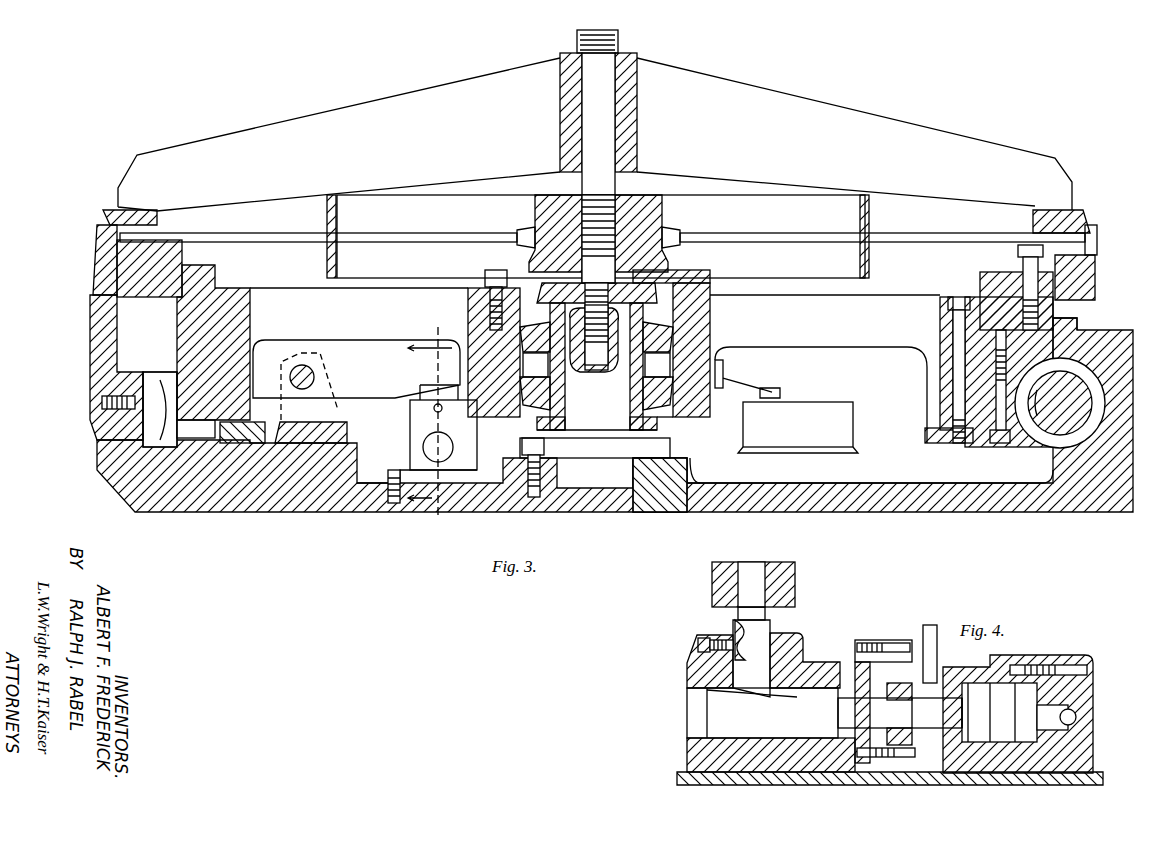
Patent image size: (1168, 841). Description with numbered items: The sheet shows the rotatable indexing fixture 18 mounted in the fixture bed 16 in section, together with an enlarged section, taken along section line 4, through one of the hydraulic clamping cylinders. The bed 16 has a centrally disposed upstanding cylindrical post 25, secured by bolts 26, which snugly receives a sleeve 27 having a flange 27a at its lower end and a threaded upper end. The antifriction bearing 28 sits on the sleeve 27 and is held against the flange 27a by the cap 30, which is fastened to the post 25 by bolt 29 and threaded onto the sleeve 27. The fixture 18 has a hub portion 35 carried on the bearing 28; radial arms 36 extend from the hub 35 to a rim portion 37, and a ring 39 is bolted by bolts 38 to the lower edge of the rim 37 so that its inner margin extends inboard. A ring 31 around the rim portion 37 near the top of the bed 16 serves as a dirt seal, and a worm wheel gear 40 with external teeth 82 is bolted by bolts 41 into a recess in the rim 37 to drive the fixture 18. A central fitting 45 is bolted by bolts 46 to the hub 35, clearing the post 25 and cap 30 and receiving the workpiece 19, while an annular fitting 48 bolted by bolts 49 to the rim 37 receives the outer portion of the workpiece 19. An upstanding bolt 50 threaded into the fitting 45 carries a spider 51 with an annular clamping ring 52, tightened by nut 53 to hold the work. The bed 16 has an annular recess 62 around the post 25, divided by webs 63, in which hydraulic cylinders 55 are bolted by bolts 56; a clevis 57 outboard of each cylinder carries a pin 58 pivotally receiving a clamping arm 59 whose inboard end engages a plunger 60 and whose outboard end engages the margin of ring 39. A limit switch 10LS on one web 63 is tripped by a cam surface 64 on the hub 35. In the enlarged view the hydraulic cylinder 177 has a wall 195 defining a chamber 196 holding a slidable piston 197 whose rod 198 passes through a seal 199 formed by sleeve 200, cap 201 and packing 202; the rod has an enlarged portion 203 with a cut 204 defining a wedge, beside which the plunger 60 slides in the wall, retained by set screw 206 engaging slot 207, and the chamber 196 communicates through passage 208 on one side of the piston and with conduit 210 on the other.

In FIG. 3, the section line 4— 4 is at (430, 427).
In FIG. 3, the limit switch 10LS is at (812, 402).
In FIG. 3, the fixture bed 16 is at (1098, 514).
In FIG. 3, the rotatable fixture 18 is at (81, 266).
In FIG. 3, the workpiece 19 is at (1100, 240).
In FIG. 3, the cylindrical post 25 is at (610, 412).
In FIG. 3, the bolts 26 is at (545, 472).
In FIG. 3, the sleeve 27 is at (566, 386).
In FIG. 3, the flange 27a is at (666, 422).
In FIG. 3, the antifriction bearing 28 is at (560, 415).
In FIG. 3, the bolt 29 is at (597, 290).
In FIG. 3, the cap 30 is at (712, 305).
In FIG. 3, the ring 31 is at (1078, 318).
In FIG. 3, the hub portion 35 is at (722, 328).
In FIG. 3, the radial arms 36 is at (842, 325).
In FIG. 3, the rim portion 37 is at (940, 323).
In FIG. 3, the bolts 38 is at (958, 300).
In FIG. 3, the ring 39 is at (925, 433).
In FIG. 3, the worm wheel gear 40 is at (1006, 447).
In FIG. 3, the bolts 41 is at (996, 442).
In FIG. 3, the central fitting 45 is at (665, 209).
In FIG. 3, the bolts 46 is at (497, 270).
In FIG. 3, the annular fitting 48 is at (1088, 275).
In FIG. 3, the bolts 49 is at (1020, 248).
In FIG. 3, the upstanding bolt 50 is at (617, 187).
In FIG. 3, the spider 51 is at (738, 94).
In FIG. 3, the annular clamping ring 52 is at (1072, 230).
In FIG. 3, the nut 53 is at (624, 50).
In FIG. 3, the hydraulic cylinders 55 is at (445, 470).
In FIG. 3, the bolts 56 is at (390, 506).
In FIG. 3, the clevis 57 is at (345, 413).
In FIG. 3, the pin 58 is at (312, 366).
In FIG. 3, the clamping arm 59 is at (384, 387).
In FIG. 4, the clamping arm 59 is at (795, 580).
In FIG. 3, the plunger 60 is at (413, 410).
In FIG. 4, the plunger 60 is at (775, 625).
In FIG. 3, the annular recess 62 is at (852, 486).
In FIG. 3, the webs 63 is at (808, 476).
In FIG. 3, the cam surface 64 is at (727, 366).
In FIG. 3, the external teeth 82 is at (160, 409).
In FIG. 4, the hydraulic cylinder 177 is at (1104, 754).
In FIG. 4, the wall 195 is at (968, 648).
In FIG. 4, the chamber 196 is at (950, 745).
In FIG. 4, the piston 197 is at (1005, 745).
In FIG. 4, the rod 198 is at (930, 727).
In FIG. 4, the seal 199 is at (900, 713).
In FIG. 4, the sleeve 200 is at (862, 640).
In FIG. 4, the cap 201 is at (850, 662).
In FIG. 4, the packing 202 is at (905, 683).
In FIG. 4, the enlarged portion 203 is at (830, 731).
In FIG. 4, the cut 204 is at (782, 705).
In FIG. 4, the set screw 206 is at (698, 645).
In FIG. 4, the slot 207 is at (737, 627).
In FIG. 4, the passage 208 is at (1078, 715).
In FIG. 4, the conduit 210 is at (933, 625).